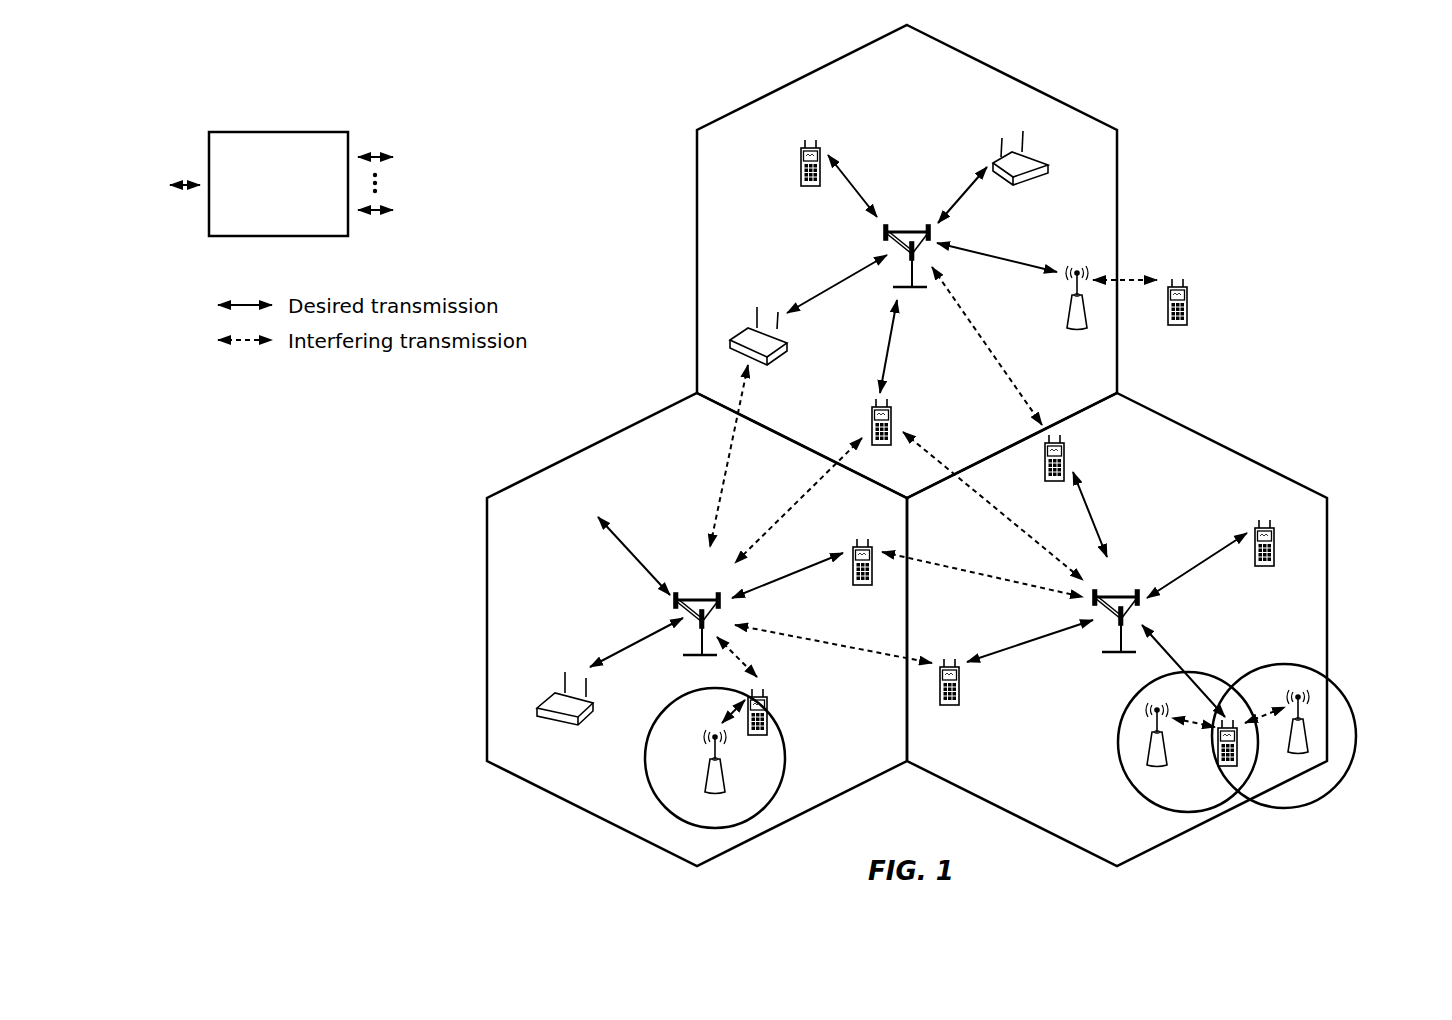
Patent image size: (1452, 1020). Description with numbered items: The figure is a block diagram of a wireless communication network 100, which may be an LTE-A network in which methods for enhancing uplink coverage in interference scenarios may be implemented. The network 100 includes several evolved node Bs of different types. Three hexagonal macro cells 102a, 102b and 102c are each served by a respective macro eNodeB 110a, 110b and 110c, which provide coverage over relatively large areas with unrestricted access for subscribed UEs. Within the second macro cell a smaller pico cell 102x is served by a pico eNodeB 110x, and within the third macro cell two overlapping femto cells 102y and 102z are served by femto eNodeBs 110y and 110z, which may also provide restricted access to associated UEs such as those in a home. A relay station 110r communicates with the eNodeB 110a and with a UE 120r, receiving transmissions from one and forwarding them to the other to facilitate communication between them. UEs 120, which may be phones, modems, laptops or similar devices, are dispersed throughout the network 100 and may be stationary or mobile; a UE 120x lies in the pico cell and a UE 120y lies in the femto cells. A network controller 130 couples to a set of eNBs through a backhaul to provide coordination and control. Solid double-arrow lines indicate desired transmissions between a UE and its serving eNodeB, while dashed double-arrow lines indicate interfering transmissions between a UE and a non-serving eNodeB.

The wireless communication network 100 is at (1262, 91).
The macro cell 102a is at (1024, 63).
The macro cell 102b is at (592, 445).
The macro cell 102c is at (1222, 445).
The pico cell 102x is at (664, 709).
The femto cell 102y is at (1126, 709).
The femto cell 102z is at (1276, 658).
The macro eNodeB 110a is at (902, 230).
The macro eNodeB 110b is at (692, 598).
The macro eNodeB 110c is at (1112, 597).
The relay station 110r is at (1066, 313).
The pico eNodeB 110x is at (722, 786).
The femto eNodeB 110y is at (1165, 758).
The femto eNodeB 110z is at (1307, 746).
The UE 120 is at (800, 156).
The UE 120r is at (1187, 316).
The UE 120x is at (798, 697).
The UE 120y is at (1222, 765).
The network controller 130 is at (272, 130).